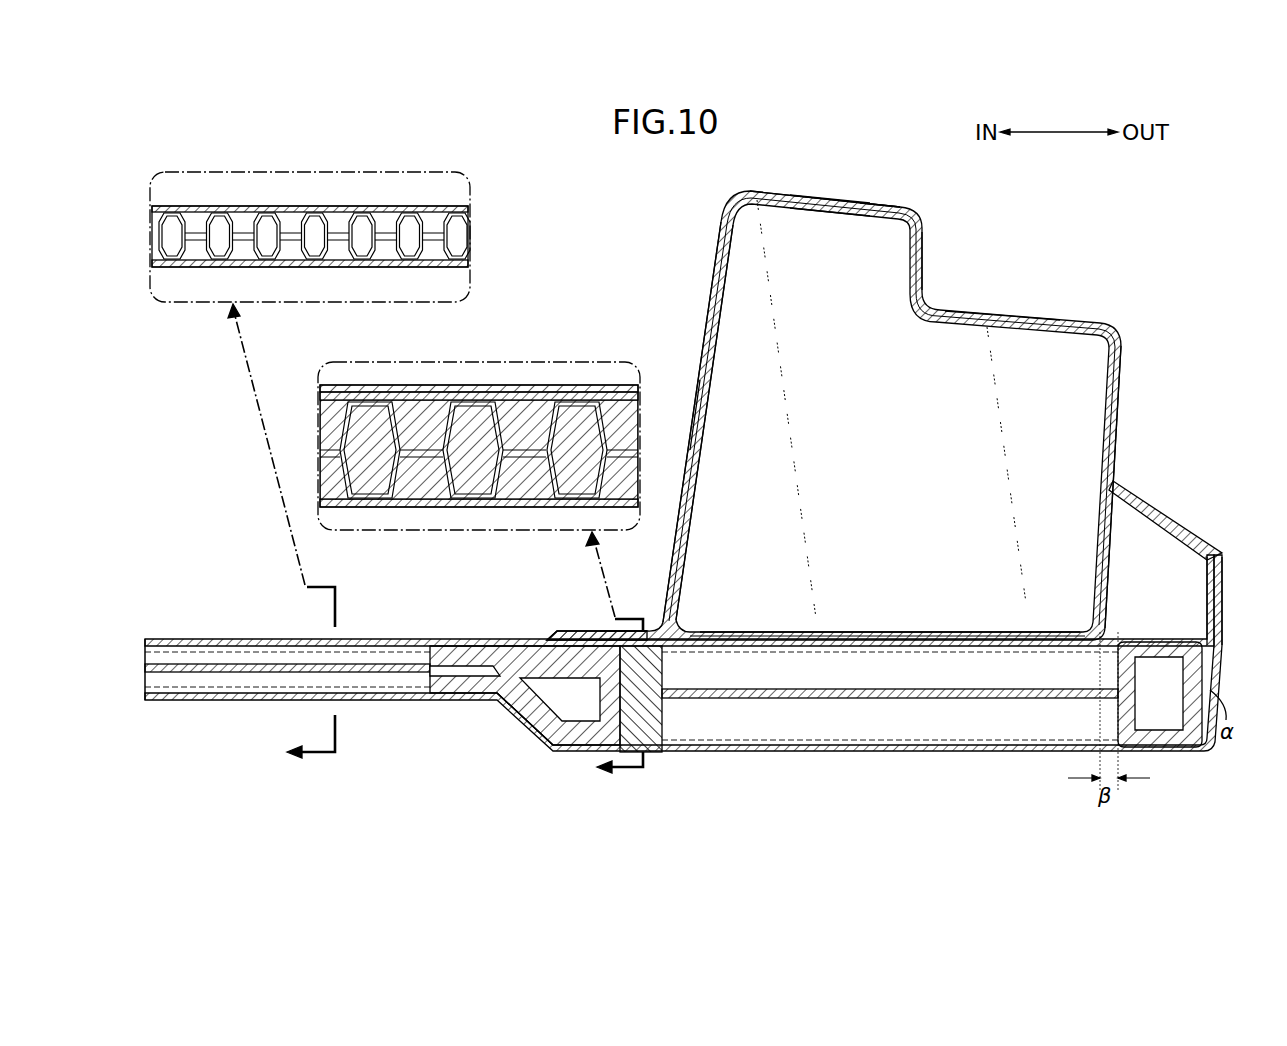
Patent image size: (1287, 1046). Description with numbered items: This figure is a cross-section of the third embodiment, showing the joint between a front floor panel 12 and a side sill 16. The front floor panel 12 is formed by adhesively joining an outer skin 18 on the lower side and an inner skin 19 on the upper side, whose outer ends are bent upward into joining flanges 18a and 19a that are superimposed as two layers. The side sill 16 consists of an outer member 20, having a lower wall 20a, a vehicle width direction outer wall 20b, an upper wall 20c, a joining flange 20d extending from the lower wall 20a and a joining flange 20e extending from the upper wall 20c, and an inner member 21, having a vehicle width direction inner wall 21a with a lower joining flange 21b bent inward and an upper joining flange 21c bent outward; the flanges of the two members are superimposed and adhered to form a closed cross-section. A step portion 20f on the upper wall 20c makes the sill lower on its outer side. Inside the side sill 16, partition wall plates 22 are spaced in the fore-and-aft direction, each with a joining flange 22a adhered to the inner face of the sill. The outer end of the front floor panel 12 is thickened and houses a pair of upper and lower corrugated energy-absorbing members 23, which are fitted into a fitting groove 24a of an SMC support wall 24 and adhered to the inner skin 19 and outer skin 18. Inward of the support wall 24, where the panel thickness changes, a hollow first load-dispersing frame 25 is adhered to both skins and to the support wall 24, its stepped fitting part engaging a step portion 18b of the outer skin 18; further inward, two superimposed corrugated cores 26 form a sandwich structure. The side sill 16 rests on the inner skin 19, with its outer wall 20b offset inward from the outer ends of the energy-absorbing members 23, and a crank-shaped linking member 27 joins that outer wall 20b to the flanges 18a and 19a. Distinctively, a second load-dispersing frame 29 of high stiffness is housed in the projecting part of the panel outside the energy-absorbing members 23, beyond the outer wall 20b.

The front floor panel 12 is at (265, 624).
The side sill 16 is at (1024, 243).
The outer skin 18 is at (340, 268).
The joining flange 18a is at (1222, 598).
The step portion 18b is at (545, 737).
The inner skin 19 is at (300, 205).
The joining flange 19a is at (1216, 553).
The outer member 20 is at (1078, 320).
The lower wall 20a is at (880, 632).
The vehicle width direction outer wall 20b is at (1120, 402).
The upper wall 20c is at (880, 205).
The joining flange 20d is at (575, 634).
The joining flange 20e is at (808, 214).
The step portion 20f is at (922, 264).
The inner member 21 is at (698, 318).
The vehicle width direction inner wall 21a is at (697, 362).
The joining flange 21b is at (598, 632).
The joining flange 21c is at (838, 196).
The partition wall plate 22 is at (917, 451).
The joining flange 22a is at (710, 436).
The energy-absorbing member 23 is at (937, 677).
The support wall 24 is at (668, 724).
The fitting groove 24a is at (665, 692).
The first load-dispersing frame 25 is at (522, 712).
The core 26 is at (462, 252).
The linking member 27 is at (1150, 498).
The second load-dispersing frame 29 is at (1174, 750).